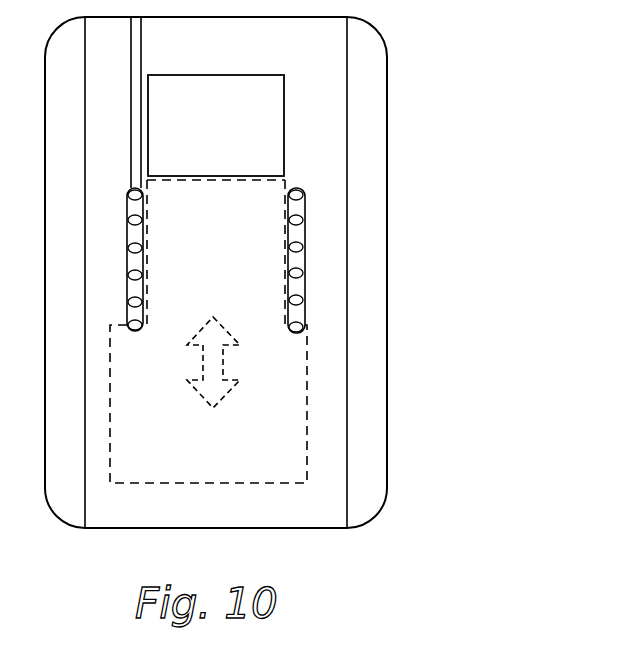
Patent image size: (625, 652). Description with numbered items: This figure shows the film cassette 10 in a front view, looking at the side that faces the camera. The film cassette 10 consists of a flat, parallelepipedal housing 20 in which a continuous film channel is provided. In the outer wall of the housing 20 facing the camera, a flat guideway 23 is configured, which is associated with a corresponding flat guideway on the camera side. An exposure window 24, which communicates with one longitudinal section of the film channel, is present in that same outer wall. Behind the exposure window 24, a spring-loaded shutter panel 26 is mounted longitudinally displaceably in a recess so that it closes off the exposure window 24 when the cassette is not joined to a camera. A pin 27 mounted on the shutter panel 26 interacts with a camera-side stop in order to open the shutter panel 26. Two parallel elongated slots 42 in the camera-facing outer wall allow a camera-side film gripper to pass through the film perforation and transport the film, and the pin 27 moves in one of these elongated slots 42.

The film cassette 10 is at (445, 70).
The housing 20 is at (387, 352).
The flat guideway 23 is at (340, 156).
The exposure window 24 is at (268, 122).
The shutter panel 26 is at (290, 446).
The pin 27 is at (133, 335).
The elongated slots 42 is at (300, 232).